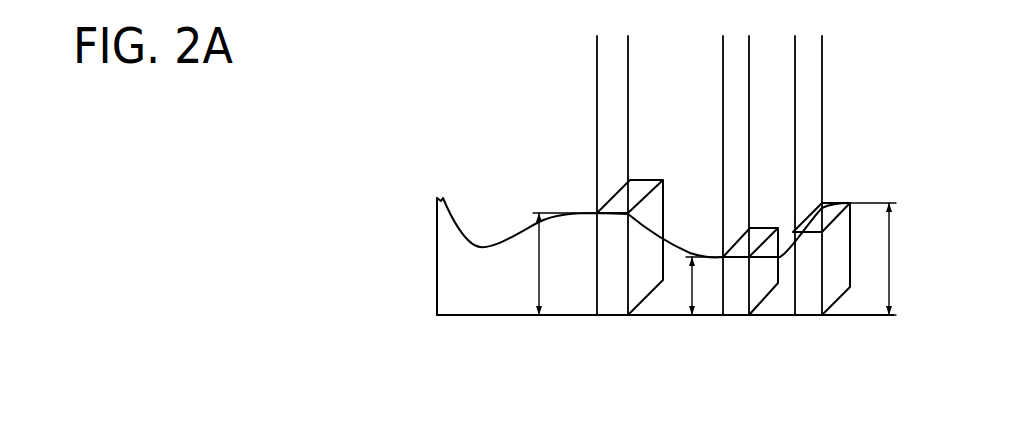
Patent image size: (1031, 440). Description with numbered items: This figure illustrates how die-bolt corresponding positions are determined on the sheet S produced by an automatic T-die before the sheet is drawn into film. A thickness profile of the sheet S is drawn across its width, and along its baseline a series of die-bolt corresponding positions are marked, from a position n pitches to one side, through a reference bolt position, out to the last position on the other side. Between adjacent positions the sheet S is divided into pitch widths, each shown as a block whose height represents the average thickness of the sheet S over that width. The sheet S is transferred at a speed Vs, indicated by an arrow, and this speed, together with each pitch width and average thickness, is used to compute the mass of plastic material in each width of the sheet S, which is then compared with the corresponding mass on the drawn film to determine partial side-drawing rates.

The sheet S is at (452, 206).
The transferring speed of the sheet Vs is at (328, 350).